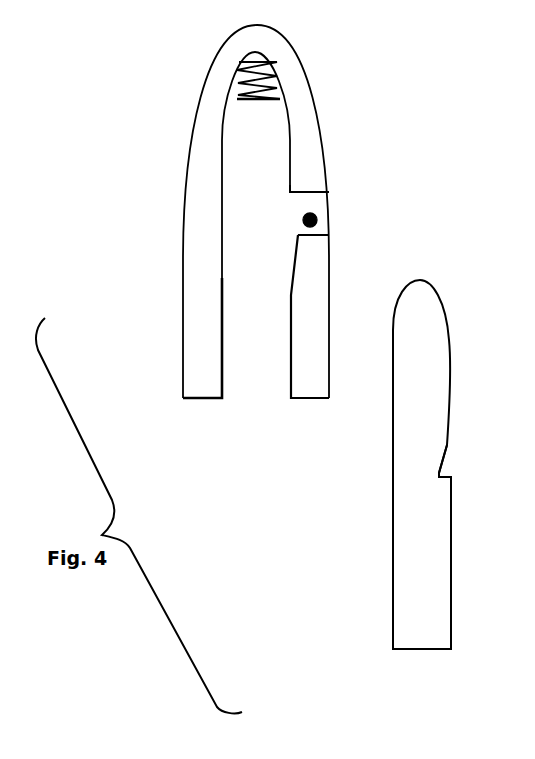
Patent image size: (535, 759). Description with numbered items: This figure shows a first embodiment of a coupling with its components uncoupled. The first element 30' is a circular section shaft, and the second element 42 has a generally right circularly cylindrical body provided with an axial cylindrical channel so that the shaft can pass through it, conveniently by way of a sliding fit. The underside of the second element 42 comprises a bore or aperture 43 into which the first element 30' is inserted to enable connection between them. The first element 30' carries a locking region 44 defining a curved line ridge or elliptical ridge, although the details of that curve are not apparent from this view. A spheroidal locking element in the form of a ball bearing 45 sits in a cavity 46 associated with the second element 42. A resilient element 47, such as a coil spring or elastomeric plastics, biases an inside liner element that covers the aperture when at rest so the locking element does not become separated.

The first element 30' is at (370, 464).
The second element 42 is at (185, 368).
The bore or aperture 43 is at (266, 408).
The locking region 44 is at (442, 452).
The ball bearing 45 is at (303, 220).
The cavity 46 is at (320, 202).
The resilient element 47 is at (282, 98).